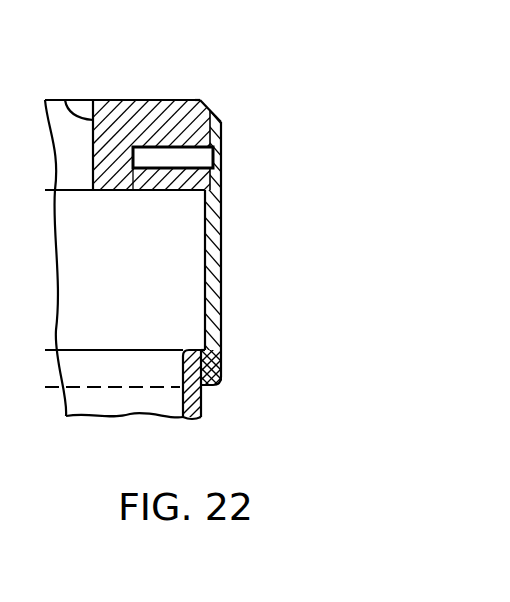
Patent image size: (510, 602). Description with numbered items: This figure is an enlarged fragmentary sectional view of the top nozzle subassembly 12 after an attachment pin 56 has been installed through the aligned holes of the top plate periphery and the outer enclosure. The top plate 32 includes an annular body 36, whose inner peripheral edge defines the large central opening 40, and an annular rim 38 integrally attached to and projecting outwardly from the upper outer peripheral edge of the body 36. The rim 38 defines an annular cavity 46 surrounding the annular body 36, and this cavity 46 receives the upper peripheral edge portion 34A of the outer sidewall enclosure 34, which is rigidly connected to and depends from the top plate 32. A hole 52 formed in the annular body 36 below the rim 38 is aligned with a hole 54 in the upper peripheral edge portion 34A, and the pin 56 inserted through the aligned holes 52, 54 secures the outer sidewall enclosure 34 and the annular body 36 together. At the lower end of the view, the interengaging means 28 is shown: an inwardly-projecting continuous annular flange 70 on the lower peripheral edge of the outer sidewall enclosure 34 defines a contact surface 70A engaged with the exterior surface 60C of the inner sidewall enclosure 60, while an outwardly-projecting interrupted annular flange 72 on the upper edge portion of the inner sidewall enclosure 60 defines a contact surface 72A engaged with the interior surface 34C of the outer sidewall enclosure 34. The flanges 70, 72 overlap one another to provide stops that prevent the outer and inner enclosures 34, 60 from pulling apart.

The top nozzle subassembly 12 is at (201, 31).
The central opening 40 is at (63, 98).
The top plate 32 is at (130, 94).
The annular body 36 is at (146, 99).
The pin 56 is at (192, 106).
The annular rim 38 is at (213, 108).
The upper peripheral edge portion 34A is at (224, 136).
The hole 54 is at (224, 160).
The annular cavity 46 is at (224, 182).
The hole 52 is at (137, 192).
The interior surface 34C is at (204, 283).
The outer sidewall enclosure 34 is at (230, 284).
The outwardly-projecting interrupted annular flange 72 is at (204, 348).
The contact surface 72A is at (220, 350).
The inwardly-projecting continuous annular flange 70 is at (224, 374).
The interengaging means 28 is at (233, 390).
The exterior surface 60C is at (203, 398).
The inner sidewall enclosure 60 is at (210, 414).
The contact surface 70A is at (183, 372).